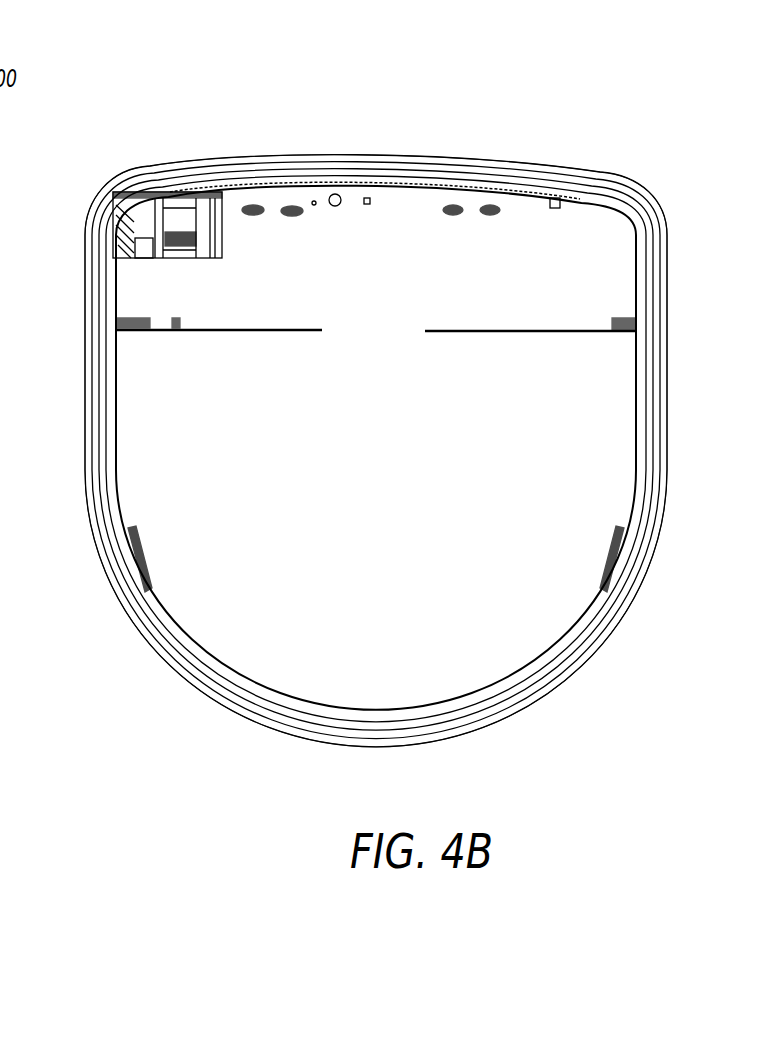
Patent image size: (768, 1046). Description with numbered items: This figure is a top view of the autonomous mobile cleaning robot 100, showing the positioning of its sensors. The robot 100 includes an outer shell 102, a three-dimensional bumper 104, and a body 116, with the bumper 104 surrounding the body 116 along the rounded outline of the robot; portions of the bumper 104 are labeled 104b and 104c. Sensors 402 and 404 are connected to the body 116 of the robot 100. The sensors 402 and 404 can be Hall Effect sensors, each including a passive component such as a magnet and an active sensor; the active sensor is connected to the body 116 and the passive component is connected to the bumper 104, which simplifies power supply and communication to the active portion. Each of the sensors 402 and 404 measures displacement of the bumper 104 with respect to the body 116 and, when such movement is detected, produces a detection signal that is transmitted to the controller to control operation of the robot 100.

The autonomous mobile cleaning robot 100 is at (643, 132).
The outer shell 102 is at (257, 693).
The bumper 104 is at (178, 668).
The frame segment 104b is at (312, 362).
The frame segment 104c is at (76, 559).
The body 116 is at (611, 244).
The sensor 402 is at (117, 290).
The sensor 404 is at (636, 289).